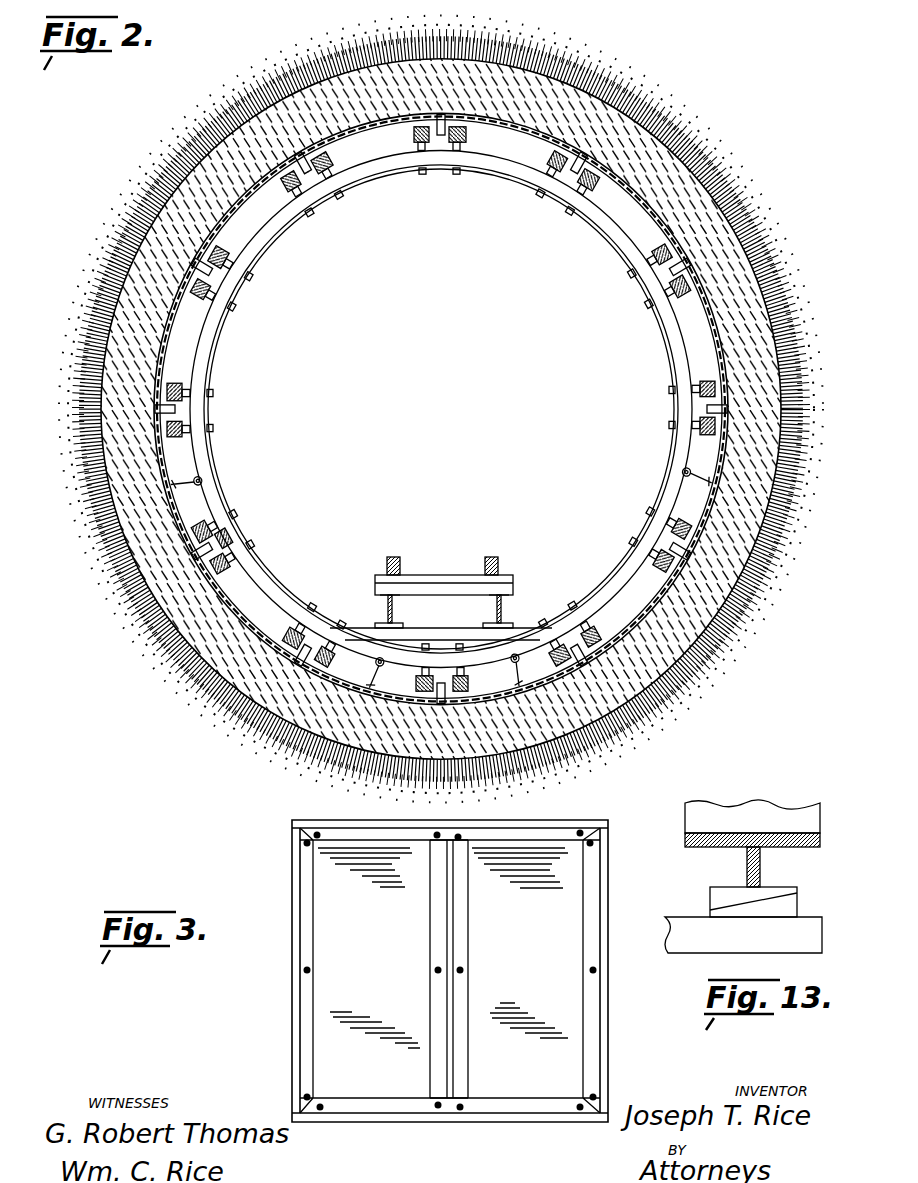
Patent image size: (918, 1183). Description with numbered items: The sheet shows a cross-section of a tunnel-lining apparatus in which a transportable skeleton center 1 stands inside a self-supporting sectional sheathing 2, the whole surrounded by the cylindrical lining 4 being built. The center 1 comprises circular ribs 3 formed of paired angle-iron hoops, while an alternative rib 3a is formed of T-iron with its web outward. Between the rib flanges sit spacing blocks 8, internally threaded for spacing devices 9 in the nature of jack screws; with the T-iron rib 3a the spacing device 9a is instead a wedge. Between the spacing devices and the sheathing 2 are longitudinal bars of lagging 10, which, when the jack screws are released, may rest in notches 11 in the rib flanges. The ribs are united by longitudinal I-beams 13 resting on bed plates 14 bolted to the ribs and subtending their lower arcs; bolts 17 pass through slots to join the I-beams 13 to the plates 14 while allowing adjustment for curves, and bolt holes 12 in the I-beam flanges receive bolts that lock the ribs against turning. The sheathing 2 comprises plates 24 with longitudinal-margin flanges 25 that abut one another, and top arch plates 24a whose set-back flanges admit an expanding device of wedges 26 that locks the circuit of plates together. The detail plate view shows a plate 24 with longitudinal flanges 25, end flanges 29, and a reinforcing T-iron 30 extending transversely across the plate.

In FIG. 2, the transportable skeleton center 1 is at (210, 350).
In FIG. 2, the self-supporting sectional sheathing 2 is at (160, 462).
In FIG. 2, the rib 3 is at (260, 233).
In FIG. 13, the rib 3a is at (802, 815).
In FIG. 2, the cylindrical lining 4 is at (582, 103).
In FIG. 2, the spacing block 8 is at (263, 557).
In FIG. 2, the spacing device 9 is at (205, 395).
In FIG. 13, the spacing device 9a is at (796, 912).
In FIG. 2, the lagging 10 is at (337, 167).
In FIG. 13, the lagging 10 is at (685, 950).
In FIG. 2, the notch 11 is at (240, 253).
In FIG. 2, the bolt hole 12 is at (257, 537).
In FIG. 2, the I-beam 13 is at (503, 617).
In FIG. 2, the bed plate 14 is at (440, 638).
In FIG. 2, the bolt 17 is at (378, 623).
In FIG. 2, the plate 24 is at (441, 409).
In FIG. 3, the plate 24 is at (443, 948).
In FIG. 2, the arch plate 24a is at (489, 127).
In FIG. 2, the flange 25 is at (303, 157).
In FIG. 3, the flange 25 is at (562, 822).
In FIG. 2, the wedge 26 is at (436, 120).
In FIG. 3, the flange 29 is at (303, 932).
In FIG. 2, the T-iron 30 is at (490, 560).
In FIG. 3, the T-iron 30 is at (458, 930).